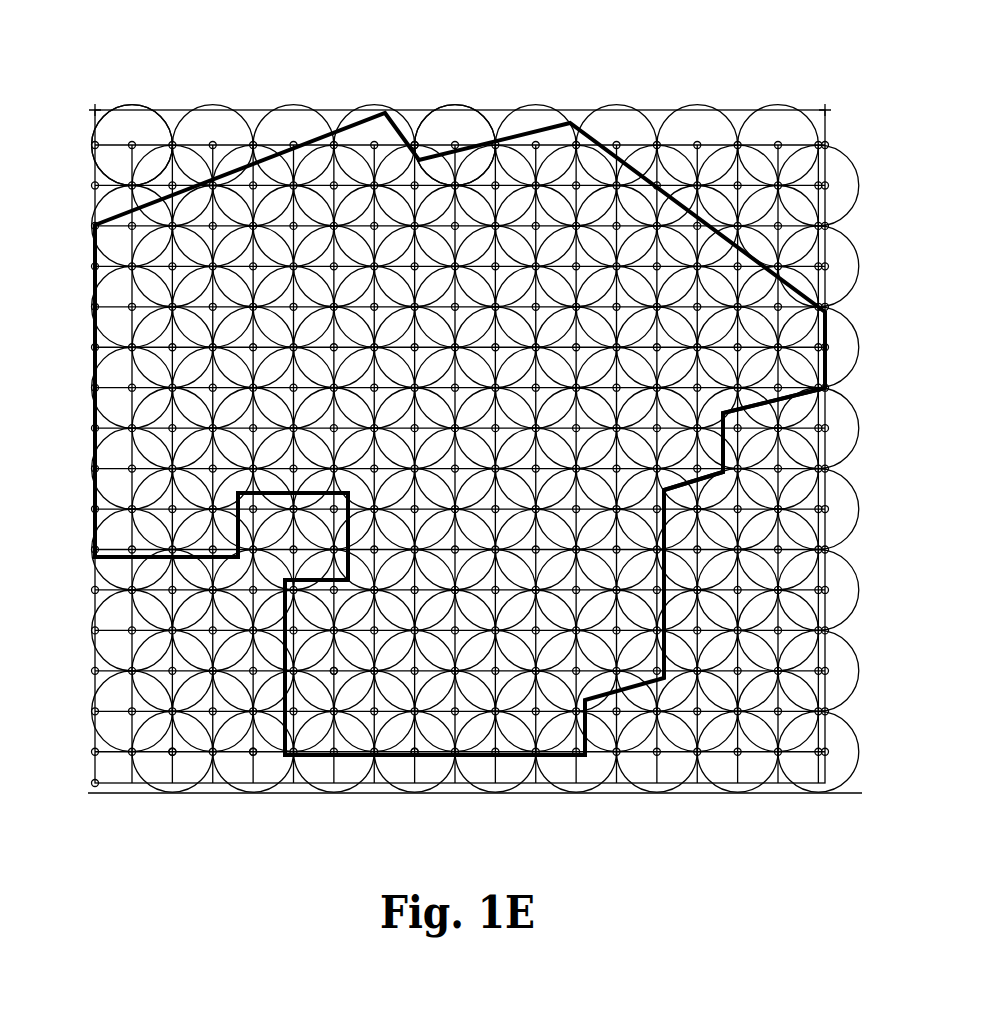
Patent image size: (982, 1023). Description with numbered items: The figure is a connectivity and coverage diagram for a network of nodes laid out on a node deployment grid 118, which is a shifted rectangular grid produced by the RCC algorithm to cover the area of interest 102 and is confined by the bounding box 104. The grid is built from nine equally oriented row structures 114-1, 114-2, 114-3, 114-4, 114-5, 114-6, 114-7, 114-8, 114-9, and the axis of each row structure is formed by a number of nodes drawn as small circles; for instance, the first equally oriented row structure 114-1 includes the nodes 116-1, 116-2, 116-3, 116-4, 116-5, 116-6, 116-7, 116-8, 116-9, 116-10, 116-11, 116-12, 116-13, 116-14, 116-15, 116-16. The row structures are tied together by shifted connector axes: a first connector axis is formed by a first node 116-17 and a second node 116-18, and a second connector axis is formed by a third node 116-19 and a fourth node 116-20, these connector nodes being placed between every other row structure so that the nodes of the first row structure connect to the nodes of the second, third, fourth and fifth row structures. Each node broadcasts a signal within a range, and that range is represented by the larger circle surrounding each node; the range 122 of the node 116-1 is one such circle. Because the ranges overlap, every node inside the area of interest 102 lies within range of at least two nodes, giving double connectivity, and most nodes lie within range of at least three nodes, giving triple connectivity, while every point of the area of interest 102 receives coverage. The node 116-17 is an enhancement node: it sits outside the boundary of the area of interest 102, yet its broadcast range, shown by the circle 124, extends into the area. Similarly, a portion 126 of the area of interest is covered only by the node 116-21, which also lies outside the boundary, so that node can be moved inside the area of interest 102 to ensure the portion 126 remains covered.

The area of interest 102 is at (352, 124).
The bounding box 104 is at (760, 110).
The first equally oriented row structure 114-1 is at (157, 125).
The second equally oriented row structure 114-2 is at (237, 125).
The third equally oriented row structure 114-3 is at (318, 125).
The fourth equally oriented row structure 114-4 is at (400, 125).
The fifth equally oriented row structure 114-5 is at (497, 130).
The sixth equally oriented row structure 114-6 is at (562, 128).
The seventh equally oriented row structure 114-7 is at (640, 128).
The eighth equally oriented row structure 114-8 is at (722, 128).
The ninth equally oriented row structure 114-9 is at (805, 128).
The node 116-1 is at (95, 145).
The node 116-2 is at (95, 185).
The node 116-3 is at (95, 226).
The node 116-4 is at (95, 266).
The node 116-5 is at (95, 307).
The node 116-6 is at (95, 347).
The node 116-7 is at (95, 388).
The node 116-8 is at (95, 428).
The node 116-9 is at (95, 469).
The node 116-10 is at (95, 509).
The node 116-11 is at (95, 550).
The node 116-12 is at (95, 590).
The node 116-13 is at (95, 630).
The node 116-14 is at (95, 671).
The node 116-15 is at (95, 711).
The node 116-16 is at (95, 752).
The first node 116-17 is at (262, 783).
The second node 116-18 is at (411, 745).
The third node 116-19 is at (160, 754).
The fourth node 116-20 is at (336, 668).
The node 116-21 is at (428, 148).
The node deployment grid 118 is at (721, 372).
The range 122 is at (125, 107).
The circle 124 is at (270, 692).
The portion 126 is at (458, 165).